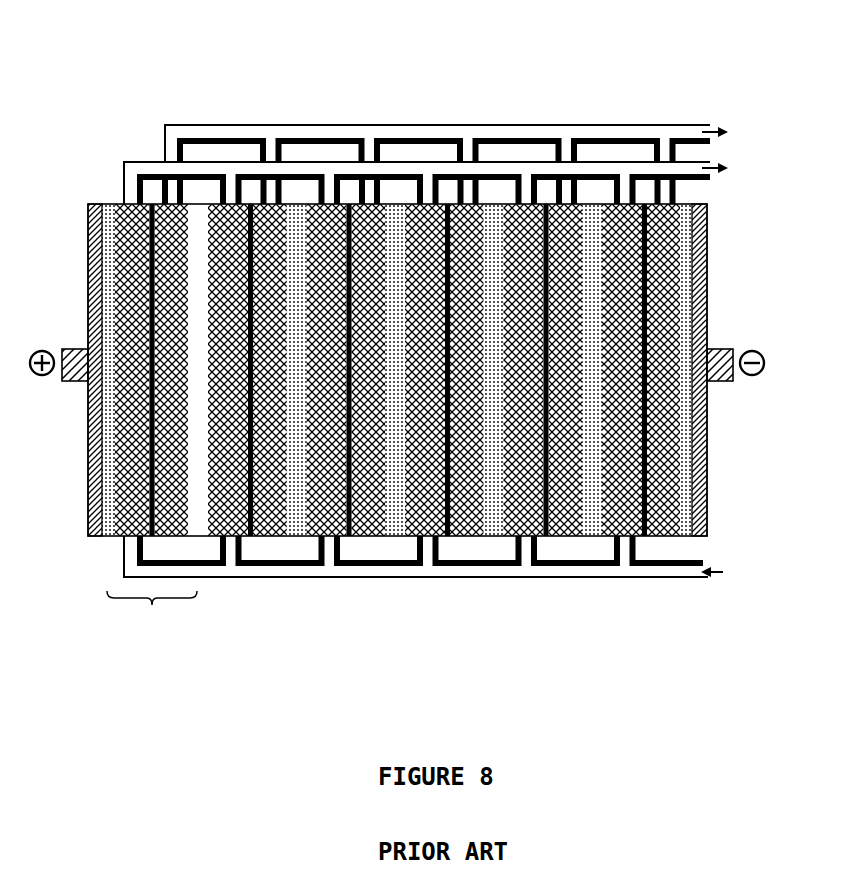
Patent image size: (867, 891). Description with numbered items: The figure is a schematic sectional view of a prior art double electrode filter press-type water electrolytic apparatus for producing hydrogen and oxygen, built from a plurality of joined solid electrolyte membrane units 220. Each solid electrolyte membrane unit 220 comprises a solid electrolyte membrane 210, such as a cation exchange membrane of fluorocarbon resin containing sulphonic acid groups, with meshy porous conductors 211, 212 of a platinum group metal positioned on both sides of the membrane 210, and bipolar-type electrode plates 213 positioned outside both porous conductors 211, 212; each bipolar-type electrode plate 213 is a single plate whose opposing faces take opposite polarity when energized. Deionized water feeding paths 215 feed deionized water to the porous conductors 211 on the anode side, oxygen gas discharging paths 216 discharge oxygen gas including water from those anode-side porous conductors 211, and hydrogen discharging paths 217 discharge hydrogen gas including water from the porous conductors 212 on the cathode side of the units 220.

The solid electrolyte membrane 210 is at (152, 204).
The meshy porous conductor 211 is at (133, 538).
The meshy porous conductor 212 is at (170, 538).
The bipolar-type electrode plate 213 is at (395, 538).
The deionized water feeding path 215 is at (523, 553).
The oxygen gas discharging path 216 is at (232, 192).
The hydrogen discharging path 217 is at (467, 152).
The solid electrolyte membrane unit 220 is at (152, 617).